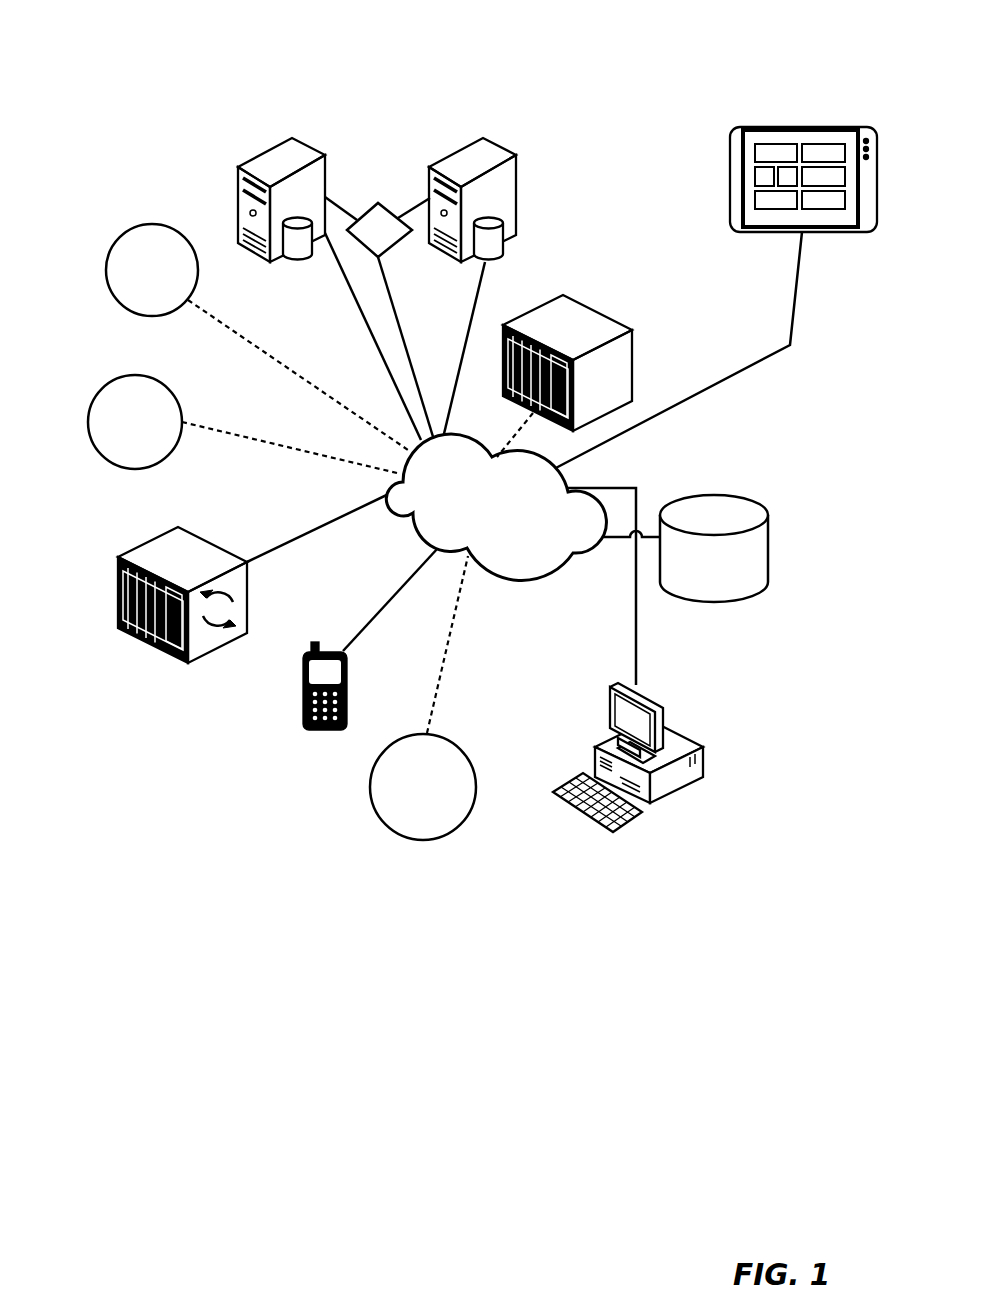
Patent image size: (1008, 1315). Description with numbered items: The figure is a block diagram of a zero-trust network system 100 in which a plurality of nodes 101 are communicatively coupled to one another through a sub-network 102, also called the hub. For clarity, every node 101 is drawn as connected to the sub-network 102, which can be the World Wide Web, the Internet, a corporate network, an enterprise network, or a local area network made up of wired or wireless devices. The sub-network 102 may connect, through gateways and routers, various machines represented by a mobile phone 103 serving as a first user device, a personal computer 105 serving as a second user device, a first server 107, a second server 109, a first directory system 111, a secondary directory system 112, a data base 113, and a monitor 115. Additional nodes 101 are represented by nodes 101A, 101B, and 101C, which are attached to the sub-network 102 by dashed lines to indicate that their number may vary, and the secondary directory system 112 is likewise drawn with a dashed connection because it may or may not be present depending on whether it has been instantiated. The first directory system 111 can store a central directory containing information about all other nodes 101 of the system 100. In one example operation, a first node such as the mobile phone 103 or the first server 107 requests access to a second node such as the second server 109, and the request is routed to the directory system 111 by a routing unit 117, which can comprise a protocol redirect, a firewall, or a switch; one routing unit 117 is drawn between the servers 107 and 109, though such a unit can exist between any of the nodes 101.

The zero-trust network system 100 is at (485, 29).
The node 101 is at (459, 434).
The node 101A is at (173, 284).
The node 101B is at (156, 436).
The node 101C is at (444, 794).
The sub-network 102 is at (509, 520).
The mobile phone 103 is at (247, 686).
The personal computer 105 is at (665, 757).
The first server 107 is at (231, 197).
The second server 109 is at (531, 200).
The first directory system 111 is at (142, 582).
The secondary directory system 112 is at (567, 347).
The data base 113 is at (729, 579).
The monitor 115 is at (803, 150).
The routing unit 117 is at (379, 230).